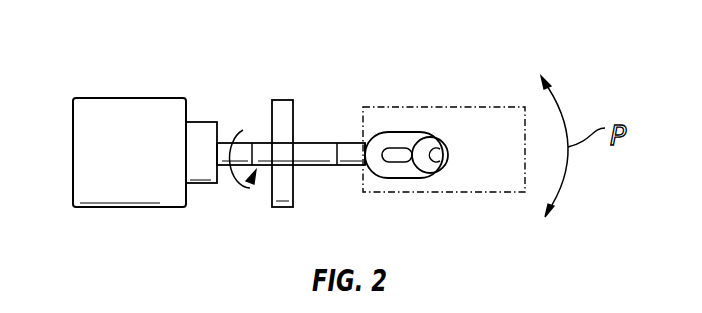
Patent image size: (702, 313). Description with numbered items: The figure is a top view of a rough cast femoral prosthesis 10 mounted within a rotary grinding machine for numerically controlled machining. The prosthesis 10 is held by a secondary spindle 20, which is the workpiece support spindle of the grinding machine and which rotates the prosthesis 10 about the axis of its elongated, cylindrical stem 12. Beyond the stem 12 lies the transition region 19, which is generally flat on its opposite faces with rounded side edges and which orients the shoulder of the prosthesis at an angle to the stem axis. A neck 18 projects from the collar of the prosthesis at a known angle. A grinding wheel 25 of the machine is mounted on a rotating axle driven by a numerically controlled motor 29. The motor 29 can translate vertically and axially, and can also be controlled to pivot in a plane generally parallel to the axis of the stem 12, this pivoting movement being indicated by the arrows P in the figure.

The femoral prosthesis 10 is at (403, 182).
The stem 12 is at (295, 148).
The neck 18 is at (402, 157).
The transition region 19 is at (354, 145).
The secondary spindle 20 is at (129, 103).
The grinding wheel 25 is at (282, 100).
The numerically controlled motor 29 is at (485, 107).